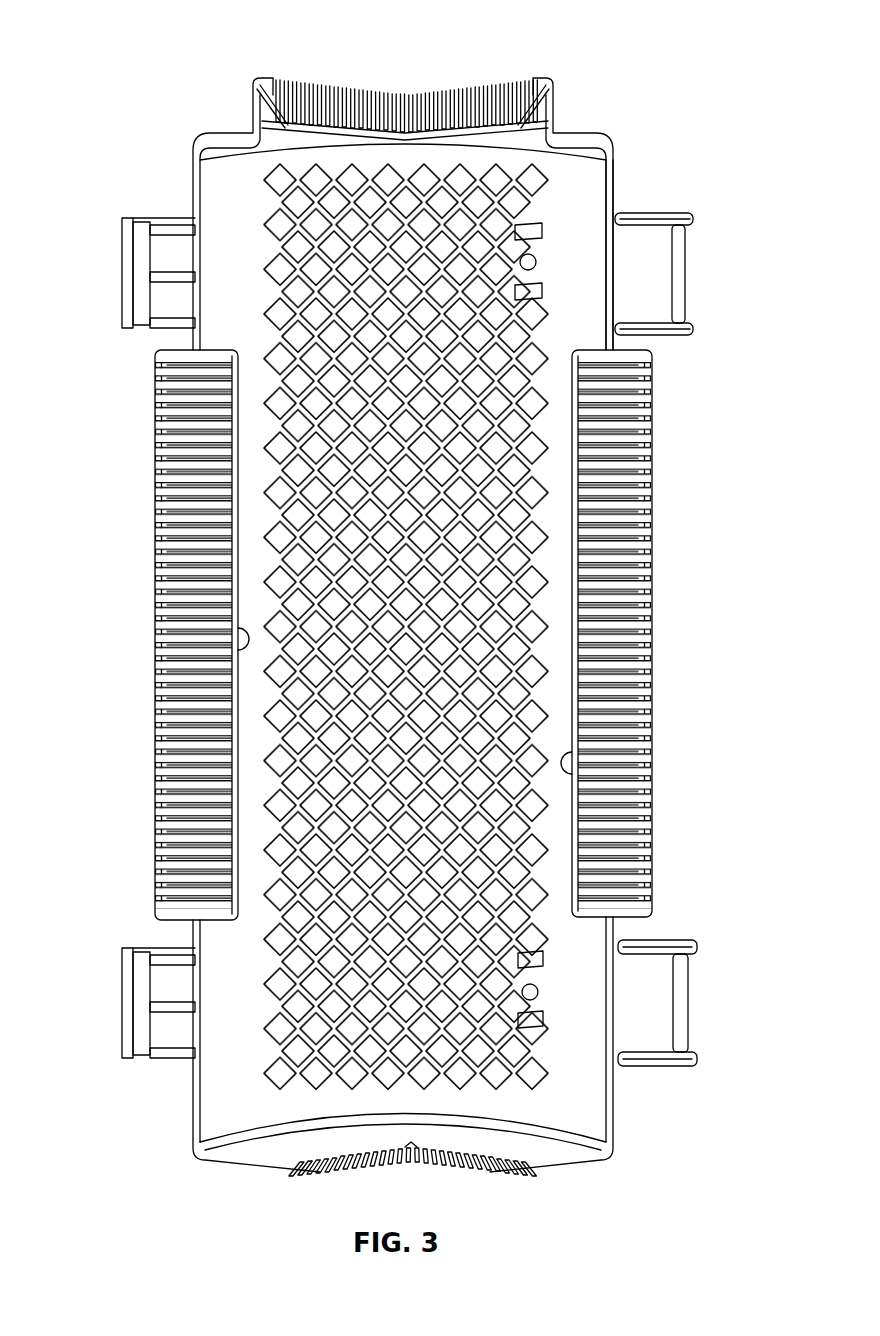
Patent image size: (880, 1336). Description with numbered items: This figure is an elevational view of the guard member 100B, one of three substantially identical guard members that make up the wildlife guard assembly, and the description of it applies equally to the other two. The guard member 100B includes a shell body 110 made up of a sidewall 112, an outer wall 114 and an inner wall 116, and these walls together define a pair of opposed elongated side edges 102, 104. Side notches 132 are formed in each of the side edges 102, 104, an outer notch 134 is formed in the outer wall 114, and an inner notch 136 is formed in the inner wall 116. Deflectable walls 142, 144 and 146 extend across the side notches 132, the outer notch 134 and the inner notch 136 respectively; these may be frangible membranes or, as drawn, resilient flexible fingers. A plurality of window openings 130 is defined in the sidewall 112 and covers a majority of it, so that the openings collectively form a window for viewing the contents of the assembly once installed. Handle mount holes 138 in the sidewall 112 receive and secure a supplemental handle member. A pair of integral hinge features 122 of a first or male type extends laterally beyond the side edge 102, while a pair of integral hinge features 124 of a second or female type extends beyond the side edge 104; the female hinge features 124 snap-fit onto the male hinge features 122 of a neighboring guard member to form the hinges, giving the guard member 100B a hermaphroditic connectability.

The guard member 100B is at (158, 50).
The side edge 102 is at (622, 207).
The side edge 104 is at (190, 177).
The shell body 110 is at (618, 168).
The sidewall 112 is at (212, 1100).
The outer wall 114 is at (562, 132).
The inner wall 116 is at (545, 1152).
The integral hinge features 122 is at (682, 280).
The integral hinge features 124 is at (128, 298).
The window openings 130 is at (495, 492).
The side notches 132 is at (245, 632).
The outer notch 134 is at (482, 142).
The inner notch 136 is at (425, 1150).
The handle mount holes 138 is at (545, 960).
The deflectable walls 142 is at (654, 524).
The deflectable wall 144 is at (375, 108).
The deflectable wall 146 is at (383, 1165).